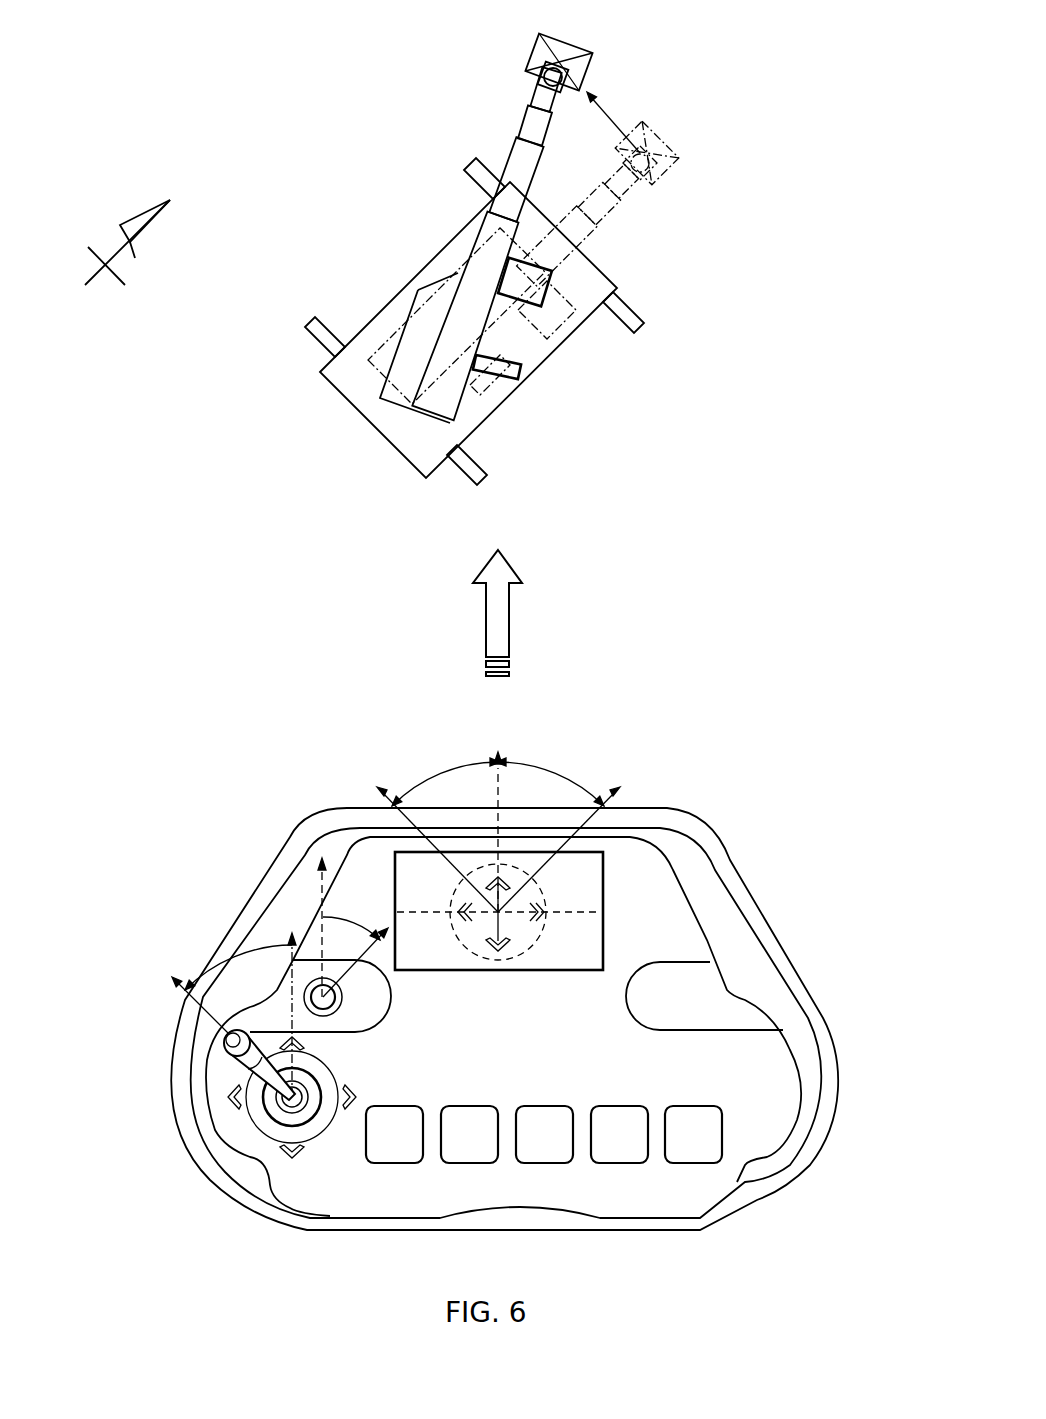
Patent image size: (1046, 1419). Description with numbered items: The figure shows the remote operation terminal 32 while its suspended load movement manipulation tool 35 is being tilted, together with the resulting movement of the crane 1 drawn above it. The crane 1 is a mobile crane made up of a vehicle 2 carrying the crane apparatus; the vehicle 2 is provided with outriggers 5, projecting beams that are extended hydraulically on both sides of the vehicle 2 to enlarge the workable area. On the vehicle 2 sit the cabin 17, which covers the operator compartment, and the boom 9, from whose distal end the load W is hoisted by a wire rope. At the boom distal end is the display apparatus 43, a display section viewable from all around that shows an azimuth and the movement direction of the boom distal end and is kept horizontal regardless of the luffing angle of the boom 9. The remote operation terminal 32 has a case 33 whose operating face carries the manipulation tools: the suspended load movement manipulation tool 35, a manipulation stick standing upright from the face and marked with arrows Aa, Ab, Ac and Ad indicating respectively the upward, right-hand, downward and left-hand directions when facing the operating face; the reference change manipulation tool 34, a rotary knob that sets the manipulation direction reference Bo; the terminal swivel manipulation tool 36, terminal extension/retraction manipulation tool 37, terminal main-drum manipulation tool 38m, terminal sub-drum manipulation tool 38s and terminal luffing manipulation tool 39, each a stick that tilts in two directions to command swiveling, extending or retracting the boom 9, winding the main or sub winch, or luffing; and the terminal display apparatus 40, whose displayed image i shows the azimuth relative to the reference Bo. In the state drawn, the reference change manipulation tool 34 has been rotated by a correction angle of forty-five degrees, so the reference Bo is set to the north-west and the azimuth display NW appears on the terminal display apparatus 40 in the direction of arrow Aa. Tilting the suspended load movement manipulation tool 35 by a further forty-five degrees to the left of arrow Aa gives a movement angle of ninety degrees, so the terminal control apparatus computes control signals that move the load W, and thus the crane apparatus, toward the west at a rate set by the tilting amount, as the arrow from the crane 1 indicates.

The crane 1 is at (383, 340).
The vehicle 2 is at (393, 257).
The outriggers 5 is at (465, 162).
The boom 9 is at (500, 116).
The cabin 17 is at (520, 371).
The display apparatus 43 is at (580, 80).
The load W is at (538, 50).
The remote operation terminal 32 is at (483, 1000).
The case 33 is at (307, 850).
The reference change manipulation tool 34 is at (340, 1001).
The suspended load movement manipulation tool 35 is at (277, 1102).
The terminal swivel manipulation tool 36 is at (383, 1157).
The terminal extension/retraction manipulation tool 37 is at (453, 1157).
The terminal main-drum manipulation tool 38m is at (530, 1157).
The terminal sub-drum manipulation tool 38s is at (605, 1157).
The terminal luffing manipulation tool 39 is at (678, 1157).
The terminal display apparatus 40 is at (570, 972).
The image i is at (593, 866).
The arrow Aa is at (306, 1045).
The arrow Ab is at (292, 1160).
The arrow Ac is at (345, 1112).
The arrow Ad is at (226, 1097).
The manipulation direction reference Bo is at (392, 909).